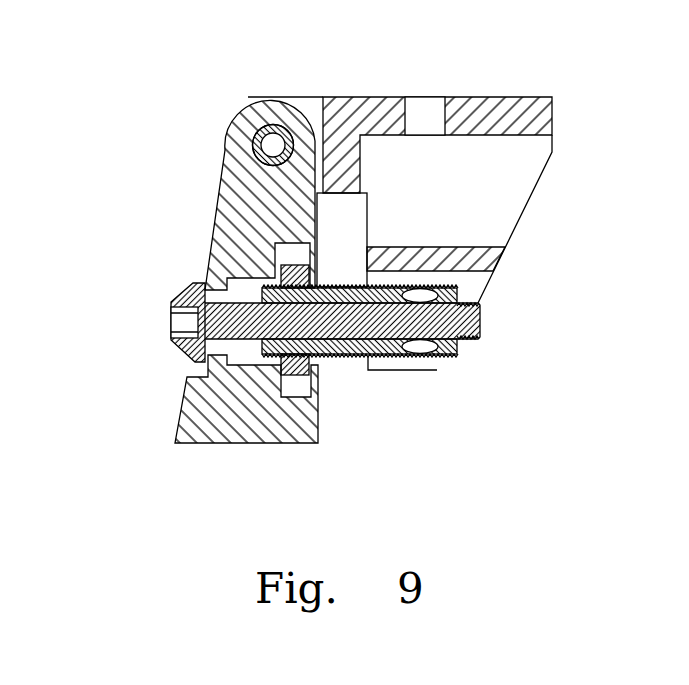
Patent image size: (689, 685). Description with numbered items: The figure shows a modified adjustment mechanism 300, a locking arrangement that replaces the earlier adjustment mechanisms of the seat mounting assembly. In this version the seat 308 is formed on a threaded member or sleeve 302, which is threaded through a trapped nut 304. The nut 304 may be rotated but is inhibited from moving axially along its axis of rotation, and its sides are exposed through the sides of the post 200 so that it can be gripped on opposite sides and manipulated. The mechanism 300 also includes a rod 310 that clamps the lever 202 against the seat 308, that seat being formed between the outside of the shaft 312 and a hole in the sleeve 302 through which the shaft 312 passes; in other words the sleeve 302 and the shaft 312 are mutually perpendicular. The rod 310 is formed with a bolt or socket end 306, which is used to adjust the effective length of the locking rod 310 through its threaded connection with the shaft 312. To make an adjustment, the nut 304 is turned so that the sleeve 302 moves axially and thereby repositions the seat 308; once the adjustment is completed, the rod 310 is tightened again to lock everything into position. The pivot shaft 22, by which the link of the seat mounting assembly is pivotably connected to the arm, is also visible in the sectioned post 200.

The shaft 22 is at (274, 126).
The post 200 is at (210, 250).
The lever 202 is at (552, 122).
The adjustment mechanism 300 is at (346, 389).
The threaded member or sleeve 302 is at (350, 358).
The trapped nut 304 is at (280, 375).
The bolt or socket end 306 is at (170, 318).
The seat 308 is at (457, 290).
The rod 310 is at (482, 319).
The shaft 312 is at (437, 370).